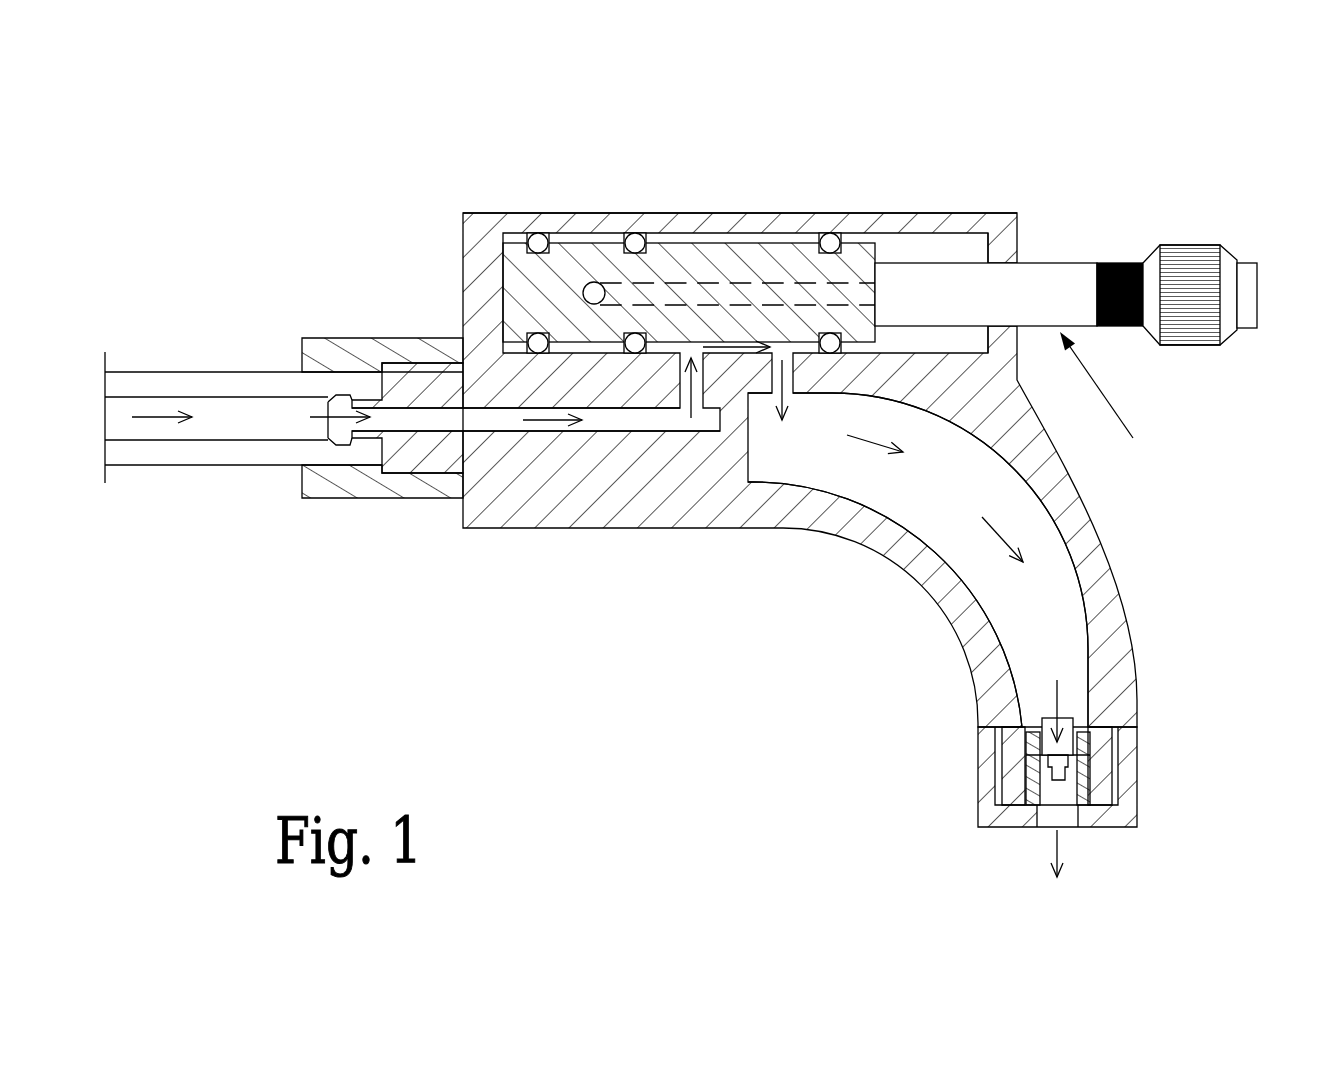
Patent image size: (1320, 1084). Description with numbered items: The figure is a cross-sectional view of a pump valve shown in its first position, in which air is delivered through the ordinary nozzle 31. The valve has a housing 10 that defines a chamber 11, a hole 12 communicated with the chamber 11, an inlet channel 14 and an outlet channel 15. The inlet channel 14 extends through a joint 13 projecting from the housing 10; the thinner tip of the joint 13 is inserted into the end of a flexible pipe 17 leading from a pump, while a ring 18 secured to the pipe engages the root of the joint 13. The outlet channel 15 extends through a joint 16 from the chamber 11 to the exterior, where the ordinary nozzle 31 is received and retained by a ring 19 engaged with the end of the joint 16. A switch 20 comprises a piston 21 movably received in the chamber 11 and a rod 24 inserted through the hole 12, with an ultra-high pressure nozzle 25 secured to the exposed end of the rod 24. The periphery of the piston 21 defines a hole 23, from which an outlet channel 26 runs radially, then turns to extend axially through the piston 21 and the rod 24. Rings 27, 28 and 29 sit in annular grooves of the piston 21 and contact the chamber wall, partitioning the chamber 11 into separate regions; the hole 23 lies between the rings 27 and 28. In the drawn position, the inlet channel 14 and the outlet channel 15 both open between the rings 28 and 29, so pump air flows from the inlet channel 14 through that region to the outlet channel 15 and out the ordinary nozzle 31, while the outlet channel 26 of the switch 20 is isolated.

The housing 10 is at (673, 550).
The chamber 11 is at (913, 248).
The hole 12 is at (1005, 262).
The joint 13 is at (411, 455).
The inlet channel 14 is at (557, 422).
The outlet channel 15 is at (812, 465).
The joint 16 is at (923, 563).
The flexible pipe 17 is at (180, 452).
The ring 18 is at (323, 498).
The ring 19 is at (1002, 820).
The switch 20 is at (1112, 407).
The piston 21 is at (691, 262).
The hole 23 is at (587, 283).
The rod 24 is at (1063, 275).
The ultra-high pressure nozzle 25 is at (1198, 262).
The outlet channel 26 is at (749, 283).
The ring 27 is at (533, 235).
The ring 28 is at (636, 238).
The ring 29 is at (829, 238).
The ordinary nozzle 31 is at (1088, 740).